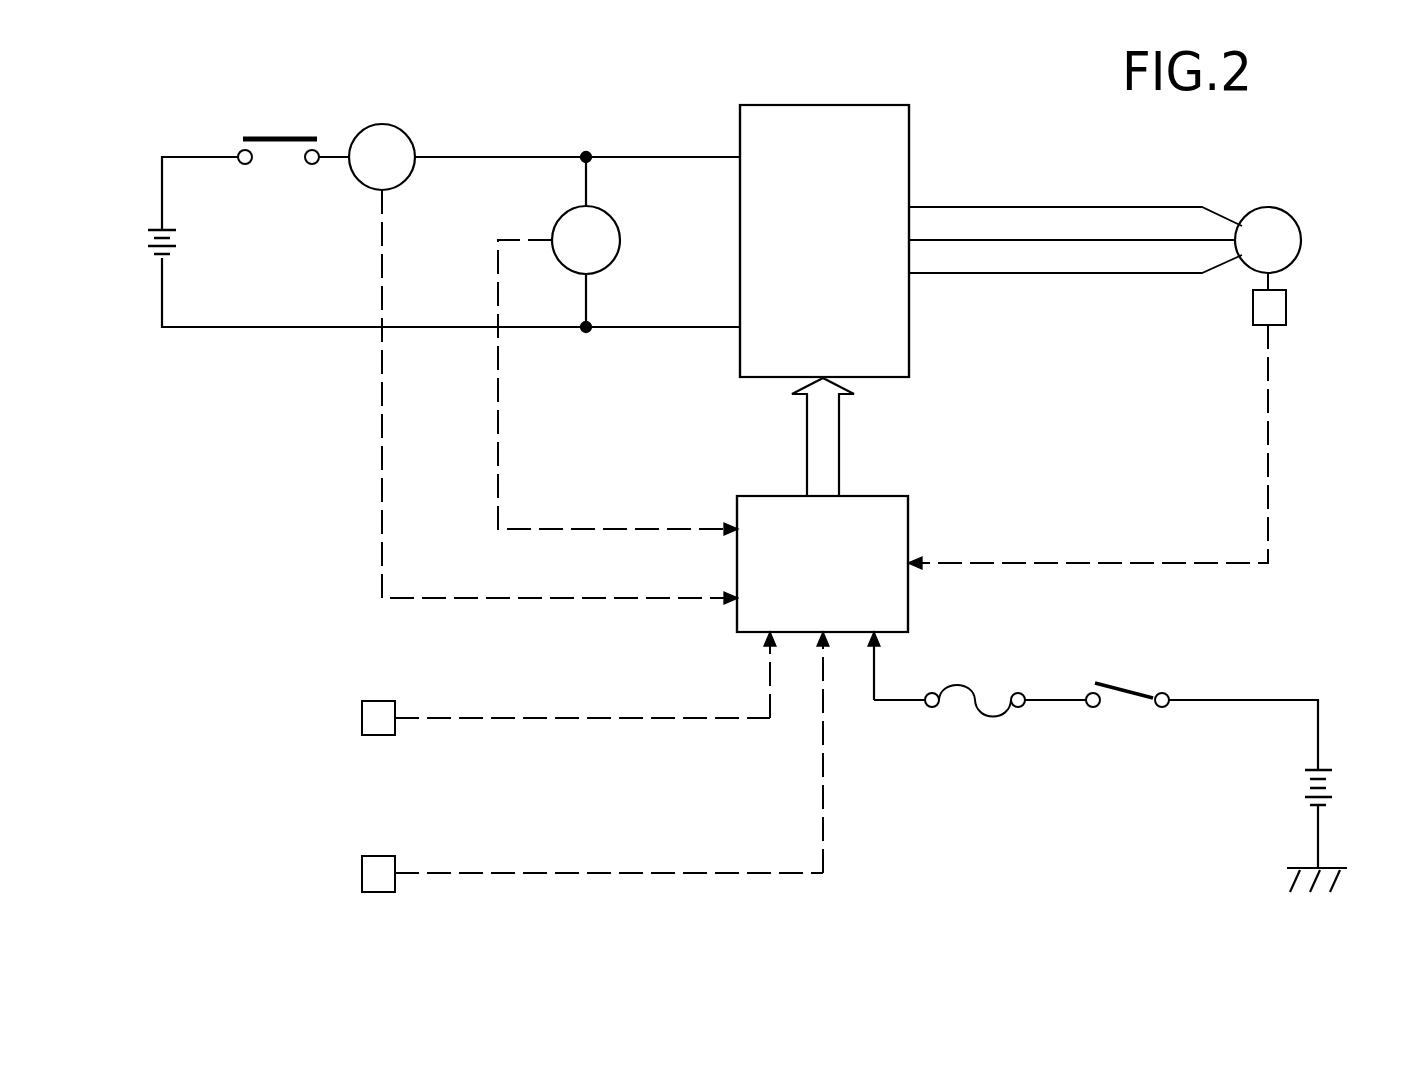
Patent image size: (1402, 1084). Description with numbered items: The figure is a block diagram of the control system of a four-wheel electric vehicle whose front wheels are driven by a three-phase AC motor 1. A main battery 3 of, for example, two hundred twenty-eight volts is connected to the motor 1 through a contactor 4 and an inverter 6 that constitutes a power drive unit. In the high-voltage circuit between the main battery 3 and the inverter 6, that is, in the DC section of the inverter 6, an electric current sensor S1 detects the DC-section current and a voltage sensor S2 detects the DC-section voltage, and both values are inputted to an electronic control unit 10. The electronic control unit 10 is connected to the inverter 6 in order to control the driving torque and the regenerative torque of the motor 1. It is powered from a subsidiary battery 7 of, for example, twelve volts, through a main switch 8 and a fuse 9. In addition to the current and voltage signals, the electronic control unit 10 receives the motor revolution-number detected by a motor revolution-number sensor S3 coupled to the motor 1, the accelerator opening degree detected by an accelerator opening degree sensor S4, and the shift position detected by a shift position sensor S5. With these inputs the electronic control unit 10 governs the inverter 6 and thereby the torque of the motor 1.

The three-phase AC motor 1 is at (1292, 217).
The main battery 3 is at (178, 243).
The contactor 4 is at (272, 137).
The inverter 6 is at (910, 130).
The subsidiary battery 7 is at (1300, 782).
The main switch 8 is at (1140, 690).
The fuse 9 is at (962, 684).
The electronic control unit 10 is at (910, 508).
The electric current sensor S1 is at (405, 134).
The voltage sensor S2 is at (612, 216).
The motor revolution-number sensor S3 is at (1287, 310).
The accelerator opening degree sensor S4 is at (362, 718).
The shift position sensor S5 is at (362, 873).